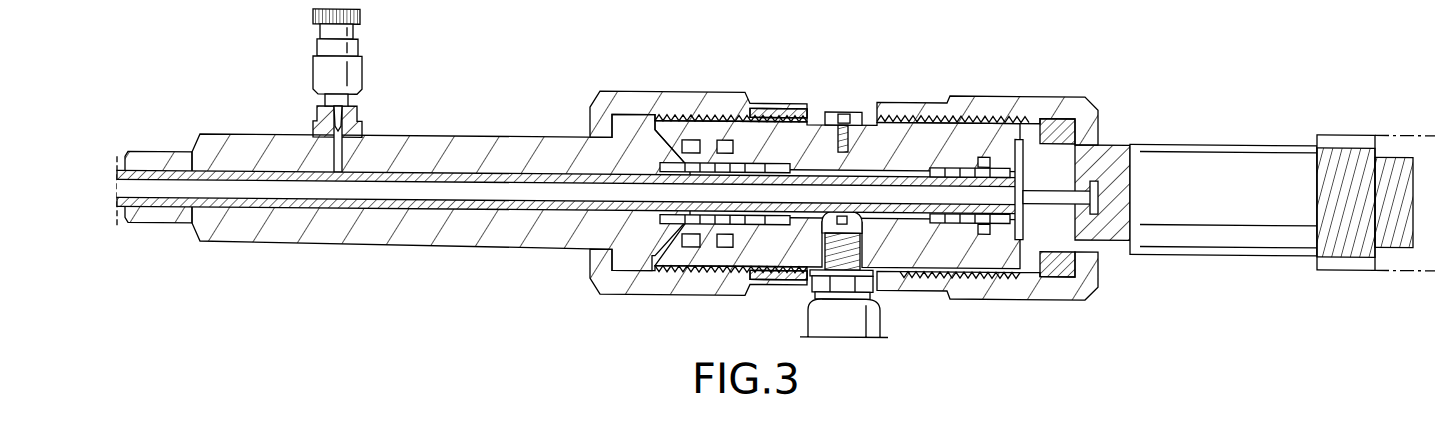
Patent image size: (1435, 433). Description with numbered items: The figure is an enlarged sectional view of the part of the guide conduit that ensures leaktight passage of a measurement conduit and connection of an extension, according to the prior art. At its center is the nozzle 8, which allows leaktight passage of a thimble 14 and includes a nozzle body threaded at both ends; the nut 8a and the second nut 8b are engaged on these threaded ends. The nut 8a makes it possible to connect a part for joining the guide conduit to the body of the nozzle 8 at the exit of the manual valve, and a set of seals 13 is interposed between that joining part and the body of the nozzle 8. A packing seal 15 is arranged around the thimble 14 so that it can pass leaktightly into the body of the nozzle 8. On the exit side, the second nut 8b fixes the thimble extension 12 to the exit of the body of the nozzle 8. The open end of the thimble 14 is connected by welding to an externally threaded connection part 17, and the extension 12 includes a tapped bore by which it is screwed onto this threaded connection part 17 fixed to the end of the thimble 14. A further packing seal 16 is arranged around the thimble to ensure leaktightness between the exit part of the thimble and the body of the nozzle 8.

The nozzle 8 is at (832, 97).
The nut 8a is at (676, 104).
The second nut 8b is at (1022, 99).
The thimble extension 12 is at (1228, 157).
The set of seals 13 is at (748, 218).
The thimble 14 is at (487, 188).
The packing seal 15 is at (705, 220).
The packing seal 16 is at (975, 216).
The threaded connection part 17 is at (1085, 143).